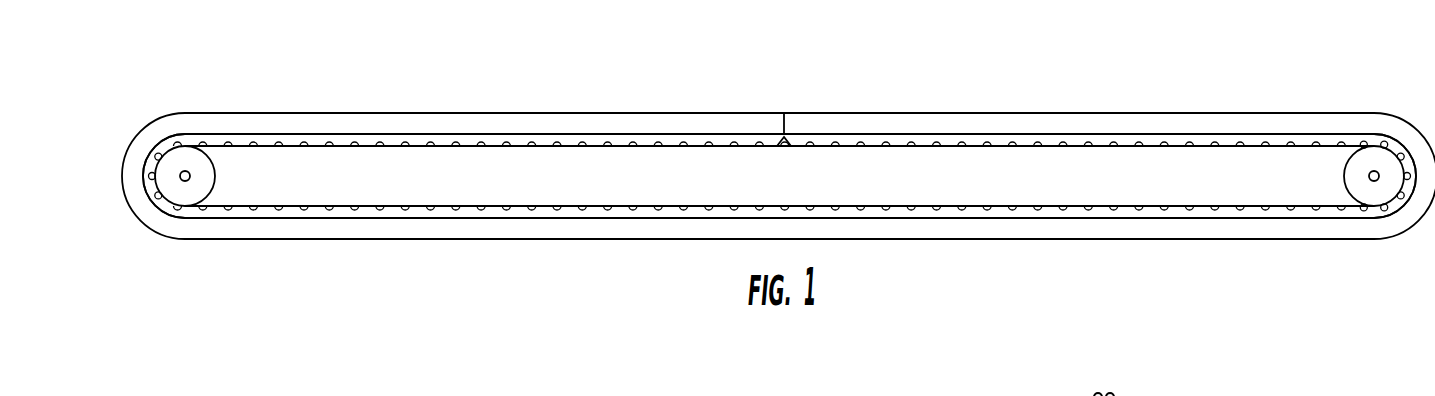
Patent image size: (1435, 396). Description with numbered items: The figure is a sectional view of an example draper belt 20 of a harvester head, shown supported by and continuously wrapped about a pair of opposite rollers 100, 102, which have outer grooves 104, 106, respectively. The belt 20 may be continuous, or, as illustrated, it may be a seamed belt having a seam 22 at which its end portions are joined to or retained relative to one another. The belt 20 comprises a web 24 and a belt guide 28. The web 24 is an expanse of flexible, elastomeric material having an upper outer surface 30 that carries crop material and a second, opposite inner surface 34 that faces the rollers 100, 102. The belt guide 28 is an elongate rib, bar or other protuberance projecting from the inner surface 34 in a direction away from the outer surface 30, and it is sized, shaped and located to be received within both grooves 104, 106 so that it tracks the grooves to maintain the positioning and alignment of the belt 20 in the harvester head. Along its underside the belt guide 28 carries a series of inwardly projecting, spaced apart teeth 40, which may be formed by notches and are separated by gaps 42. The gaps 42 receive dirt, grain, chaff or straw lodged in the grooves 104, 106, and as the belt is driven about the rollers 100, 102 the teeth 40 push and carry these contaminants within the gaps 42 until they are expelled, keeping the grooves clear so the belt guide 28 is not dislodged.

The draper belt 20 is at (143, 120).
The seam 22 is at (785, 128).
The web 24 is at (554, 113).
The belt guide 28 is at (453, 147).
The upper outer surface 30 is at (913, 113).
The inner surface 34 is at (1045, 135).
The teeth 40 is at (327, 147).
The gaps 42 is at (388, 147).
The roller 100 is at (228, 180).
The roller 102 is at (1332, 177).
The groove 104 is at (226, 167).
The groove 106 is at (1348, 195).